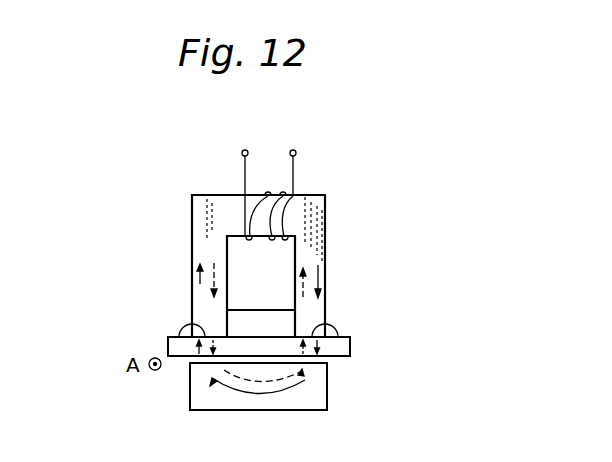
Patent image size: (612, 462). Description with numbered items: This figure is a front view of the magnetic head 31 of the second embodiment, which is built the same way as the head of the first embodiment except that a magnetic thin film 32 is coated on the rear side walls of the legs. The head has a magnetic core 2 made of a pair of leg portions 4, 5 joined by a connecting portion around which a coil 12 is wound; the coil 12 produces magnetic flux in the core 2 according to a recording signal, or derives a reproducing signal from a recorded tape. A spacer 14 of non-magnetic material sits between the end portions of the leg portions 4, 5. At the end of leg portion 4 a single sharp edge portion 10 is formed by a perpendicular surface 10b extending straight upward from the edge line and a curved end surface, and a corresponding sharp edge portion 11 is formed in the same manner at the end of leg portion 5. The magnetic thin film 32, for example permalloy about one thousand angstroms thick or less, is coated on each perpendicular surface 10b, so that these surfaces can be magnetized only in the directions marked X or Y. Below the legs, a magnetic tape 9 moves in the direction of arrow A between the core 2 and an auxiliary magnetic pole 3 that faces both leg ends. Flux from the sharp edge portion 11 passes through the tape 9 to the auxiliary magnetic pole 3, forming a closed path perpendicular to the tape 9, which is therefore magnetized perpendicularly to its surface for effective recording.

The magnetic head 31 is at (336, 212).
The magnetic thin film 32 is at (192, 200).
The leg portion 4 is at (192, 224).
The leg portion 5 is at (325, 250).
The magnetic core 2 is at (348, 191).
The coil 12 is at (295, 166).
The spacer 14 is at (253, 312).
The perpendicular surface 10b is at (192, 307).
The sharp edge portion 10 is at (188, 332).
The sharp edge portion 11 is at (338, 334).
The magnetic tape 9 is at (350, 347).
The auxiliary magnetic pole 3 is at (327, 397).